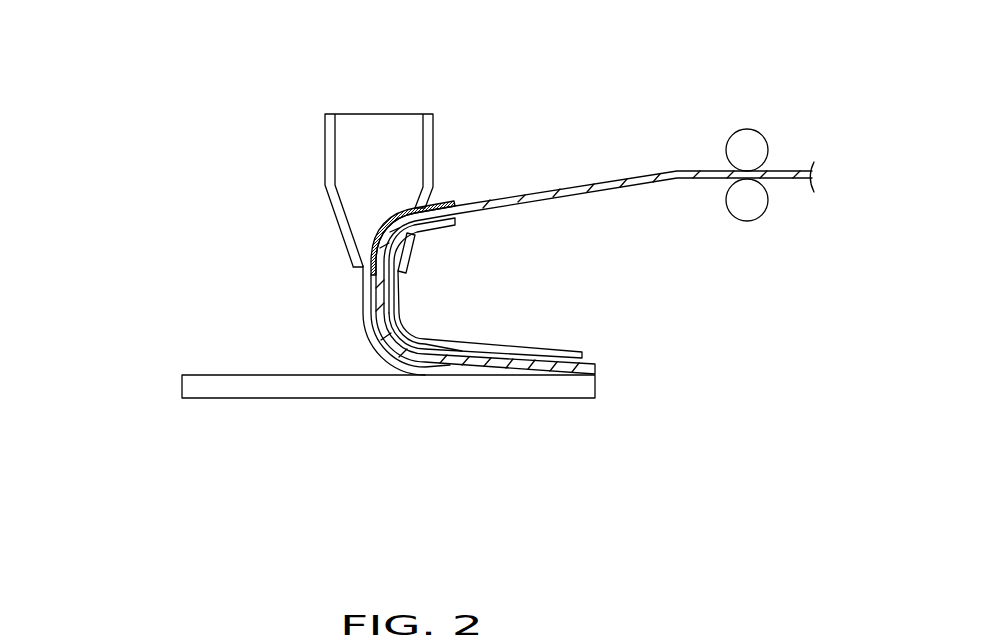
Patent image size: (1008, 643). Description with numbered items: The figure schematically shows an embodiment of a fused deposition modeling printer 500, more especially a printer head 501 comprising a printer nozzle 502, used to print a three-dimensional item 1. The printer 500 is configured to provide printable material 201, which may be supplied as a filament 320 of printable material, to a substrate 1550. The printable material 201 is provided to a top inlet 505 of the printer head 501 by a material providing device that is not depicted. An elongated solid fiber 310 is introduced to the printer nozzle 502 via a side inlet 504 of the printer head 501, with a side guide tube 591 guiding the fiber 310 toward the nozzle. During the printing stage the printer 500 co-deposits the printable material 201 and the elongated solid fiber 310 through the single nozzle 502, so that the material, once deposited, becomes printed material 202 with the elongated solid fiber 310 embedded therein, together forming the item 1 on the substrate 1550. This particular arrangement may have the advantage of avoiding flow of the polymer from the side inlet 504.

The 3D item 1 is at (346, 345).
The 3D printable material 201 is at (413, 147).
The 3D printed material 202 is at (576, 355).
The elongated solid fiber 310 is at (566, 196).
The filament of printable 3D printable material 320 is at (312, 307).
The fused deposition modeling 3D printer 500 is at (218, 136).
The printer head 501 is at (306, 195).
The printer nozzle 502 is at (340, 277).
The side inlet 504 is at (413, 243).
The top inlet 505 is at (428, 80).
The side guide tube 591 is at (470, 238).
The substrate 1550 is at (160, 384).